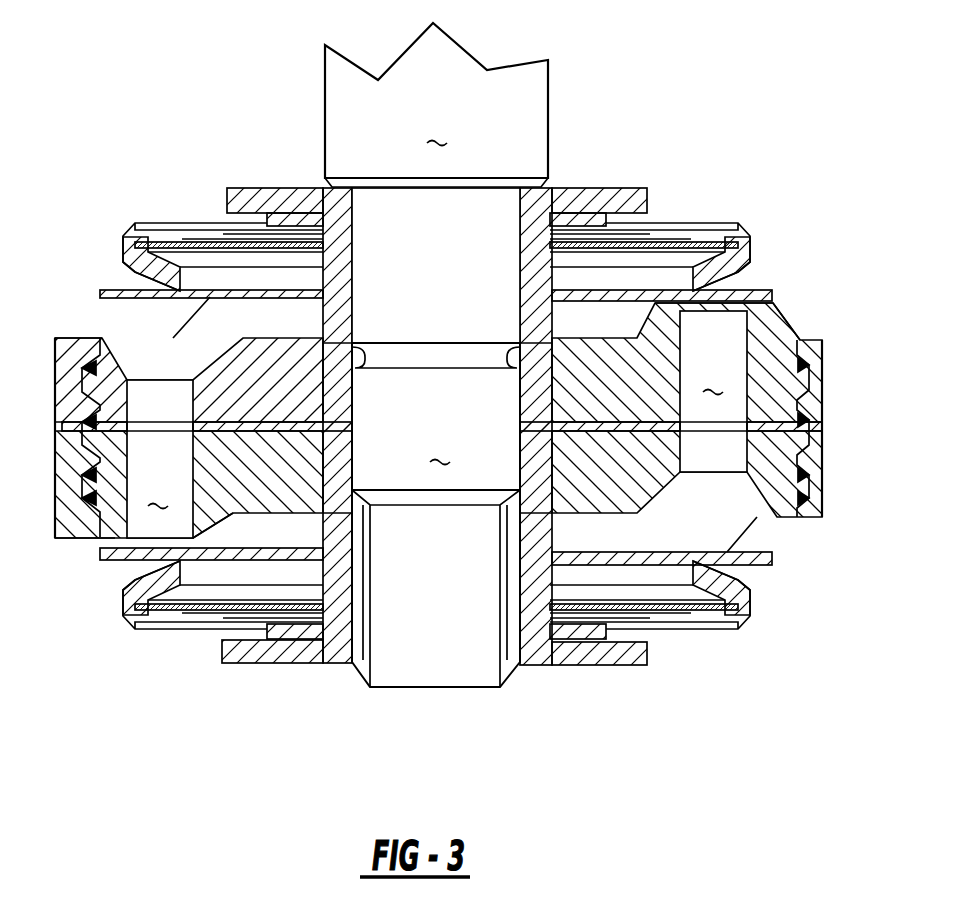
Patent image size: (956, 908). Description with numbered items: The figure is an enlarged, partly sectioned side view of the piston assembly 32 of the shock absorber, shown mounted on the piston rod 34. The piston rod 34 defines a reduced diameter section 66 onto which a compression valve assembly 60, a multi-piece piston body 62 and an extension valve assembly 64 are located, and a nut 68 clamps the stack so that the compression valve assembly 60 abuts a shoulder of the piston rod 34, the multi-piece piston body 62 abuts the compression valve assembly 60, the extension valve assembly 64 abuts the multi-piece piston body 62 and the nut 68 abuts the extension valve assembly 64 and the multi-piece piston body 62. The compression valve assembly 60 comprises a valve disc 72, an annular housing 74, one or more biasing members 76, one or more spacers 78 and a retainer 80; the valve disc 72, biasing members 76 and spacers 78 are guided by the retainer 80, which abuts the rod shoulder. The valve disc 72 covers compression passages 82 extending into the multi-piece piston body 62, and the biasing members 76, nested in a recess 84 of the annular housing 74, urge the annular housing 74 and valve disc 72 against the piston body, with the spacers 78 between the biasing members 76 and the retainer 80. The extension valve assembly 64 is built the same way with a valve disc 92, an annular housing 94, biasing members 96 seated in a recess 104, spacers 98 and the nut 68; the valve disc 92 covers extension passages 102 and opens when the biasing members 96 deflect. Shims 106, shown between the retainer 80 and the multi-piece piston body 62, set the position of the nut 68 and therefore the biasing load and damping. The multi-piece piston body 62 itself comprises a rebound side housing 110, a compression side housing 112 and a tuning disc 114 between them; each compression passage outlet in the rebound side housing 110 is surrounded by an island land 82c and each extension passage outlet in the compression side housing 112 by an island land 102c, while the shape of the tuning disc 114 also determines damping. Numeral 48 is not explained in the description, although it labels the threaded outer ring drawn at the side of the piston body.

The piston assembly 32 is at (187, 637).
The piston rod 34 is at (436, 105).
The threaded retaining ring 48 is at (53, 453).
The compression valve assembly 60 is at (186, 240).
The multi-piece piston body 62 is at (92, 372).
The extension valve assembly 64 is at (348, 720).
The reduced diameter section 66 is at (436, 416).
The nut 68 is at (557, 660).
The valve disc 72 is at (756, 292).
The annular housing 74 is at (744, 254).
The biasing members 76 is at (676, 240).
The spacers 78 is at (295, 222).
The retainer 80 is at (597, 192).
The compression passages 82 is at (687, 410).
The island land 82c is at (770, 317).
The recess 84 is at (152, 227).
The valve disc 92 is at (765, 560).
The annular housing 94 is at (156, 583).
The biasing members 96 is at (707, 610).
The spacers 98 is at (583, 639).
The extension passages 102 is at (136, 446).
The island land 102c is at (212, 540).
The recess 104 is at (142, 623).
The shims 106 is at (340, 338).
The rebound side housing 110 is at (99, 388).
The compression side housing 112 is at (112, 527).
The tuning disc 114 is at (790, 440).